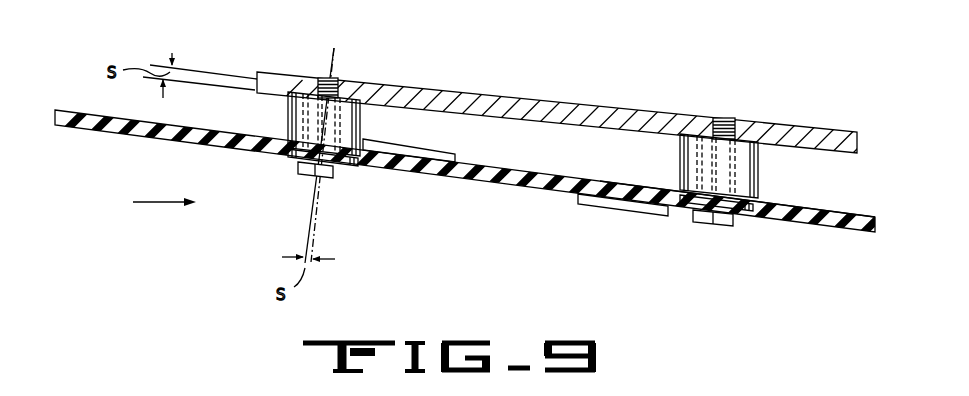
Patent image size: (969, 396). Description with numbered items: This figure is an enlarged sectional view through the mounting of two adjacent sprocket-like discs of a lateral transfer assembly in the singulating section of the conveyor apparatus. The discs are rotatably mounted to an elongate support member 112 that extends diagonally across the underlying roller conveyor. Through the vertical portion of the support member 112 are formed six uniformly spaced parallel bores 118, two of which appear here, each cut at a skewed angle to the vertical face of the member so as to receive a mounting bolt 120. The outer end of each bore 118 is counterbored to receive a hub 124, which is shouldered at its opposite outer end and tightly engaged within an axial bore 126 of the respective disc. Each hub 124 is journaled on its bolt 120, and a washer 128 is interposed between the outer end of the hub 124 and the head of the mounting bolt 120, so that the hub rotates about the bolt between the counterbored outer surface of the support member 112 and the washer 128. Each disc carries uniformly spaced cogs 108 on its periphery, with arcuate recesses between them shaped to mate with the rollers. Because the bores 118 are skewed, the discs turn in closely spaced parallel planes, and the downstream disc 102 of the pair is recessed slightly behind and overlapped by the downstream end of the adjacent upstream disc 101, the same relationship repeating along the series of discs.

The disc 101 is at (148, 140).
The disc 102 is at (828, 228).
The cog 108 is at (425, 152).
The support member 112 is at (455, 91).
The bore 118 is at (336, 78).
The mounting bolt 120 is at (318, 79).
The hub 124 is at (289, 117).
The axial bore 126 is at (299, 173).
The washer 128 is at (352, 164).